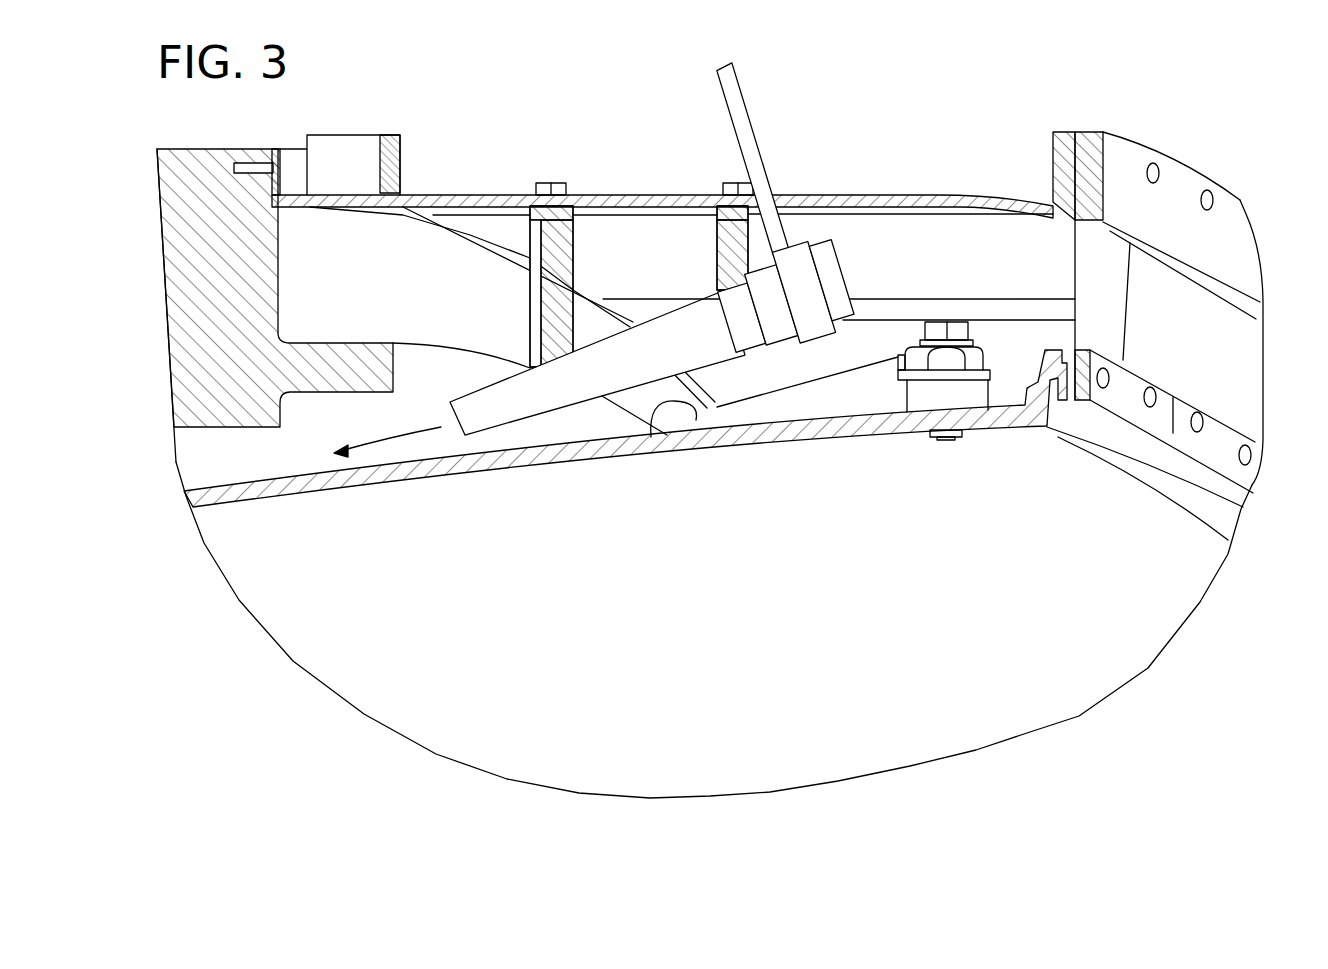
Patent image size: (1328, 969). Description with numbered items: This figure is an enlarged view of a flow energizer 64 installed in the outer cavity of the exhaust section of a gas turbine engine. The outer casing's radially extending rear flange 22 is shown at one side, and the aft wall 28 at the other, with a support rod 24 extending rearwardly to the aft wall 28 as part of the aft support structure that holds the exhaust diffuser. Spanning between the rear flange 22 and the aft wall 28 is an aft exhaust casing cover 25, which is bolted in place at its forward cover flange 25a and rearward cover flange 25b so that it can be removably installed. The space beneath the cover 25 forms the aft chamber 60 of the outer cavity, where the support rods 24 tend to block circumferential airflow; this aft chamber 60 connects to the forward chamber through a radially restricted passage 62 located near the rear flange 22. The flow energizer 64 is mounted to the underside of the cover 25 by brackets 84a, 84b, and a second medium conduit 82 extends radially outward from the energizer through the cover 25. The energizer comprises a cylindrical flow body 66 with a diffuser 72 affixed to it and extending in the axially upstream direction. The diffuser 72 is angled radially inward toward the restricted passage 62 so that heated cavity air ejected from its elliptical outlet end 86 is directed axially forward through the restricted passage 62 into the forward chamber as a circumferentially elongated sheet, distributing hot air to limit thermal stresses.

The rear flange 22 is at (180, 191).
The support rod 24 is at (830, 398).
The aft exhaust casing cover 25 is at (677, 193).
The forward cover flange 25a is at (400, 160).
The rearward cover flange 25b is at (1053, 160).
The aft wall 28 is at (1222, 362).
The aft chamber 60 is at (570, 430).
The restricted passage 62 is at (221, 457).
The flow energizer 64 is at (727, 362).
The flow body 66 is at (800, 290).
The diffuser 72 is at (630, 383).
The second medium conduit 82 is at (765, 130).
The bracket 84a is at (548, 293).
The bracket 84b is at (727, 248).
The outlet end 86 is at (473, 436).